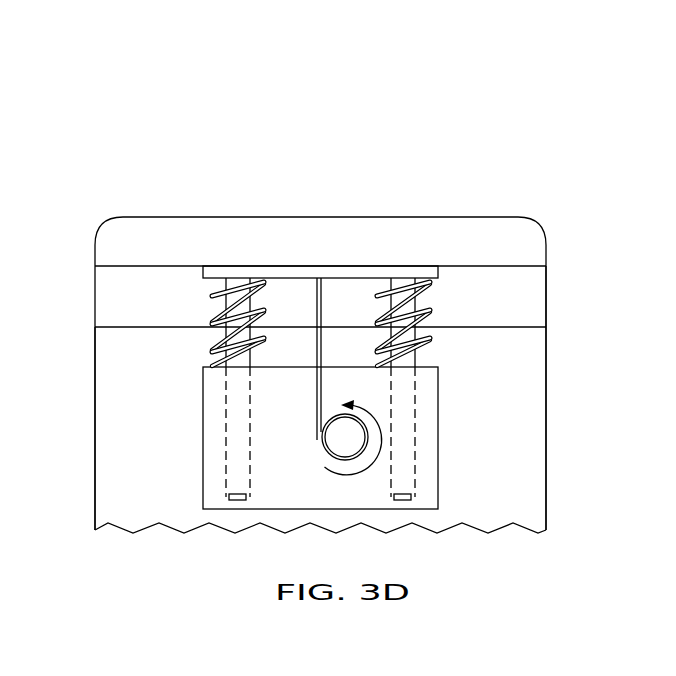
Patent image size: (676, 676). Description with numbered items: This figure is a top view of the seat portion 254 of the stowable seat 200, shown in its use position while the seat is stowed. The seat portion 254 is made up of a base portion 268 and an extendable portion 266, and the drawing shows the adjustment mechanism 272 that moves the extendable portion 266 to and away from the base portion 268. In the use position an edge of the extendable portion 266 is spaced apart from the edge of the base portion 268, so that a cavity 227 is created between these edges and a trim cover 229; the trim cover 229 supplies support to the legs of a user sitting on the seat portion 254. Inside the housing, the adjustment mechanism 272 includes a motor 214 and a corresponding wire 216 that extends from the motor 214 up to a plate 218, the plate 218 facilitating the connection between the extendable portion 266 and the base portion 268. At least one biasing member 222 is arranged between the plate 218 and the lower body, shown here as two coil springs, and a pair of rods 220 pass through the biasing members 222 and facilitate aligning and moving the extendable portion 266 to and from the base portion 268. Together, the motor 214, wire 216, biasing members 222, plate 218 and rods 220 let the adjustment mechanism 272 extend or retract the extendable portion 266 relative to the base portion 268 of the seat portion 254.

The stowable seat 200 is at (518, 120).
The adjustment mechanism 272 is at (283, 334).
The extendable portion 266 is at (542, 250).
The cavity 227 is at (279, 298).
The trim cover 229 is at (515, 316).
The base portion 268 is at (103, 435).
The plate 218 is at (433, 270).
The biasing member 222 is at (212, 292).
The rods 220 is at (426, 345).
The wire 216 is at (322, 398).
The motor 214 is at (322, 455).
The seat portion 254 is at (604, 428).